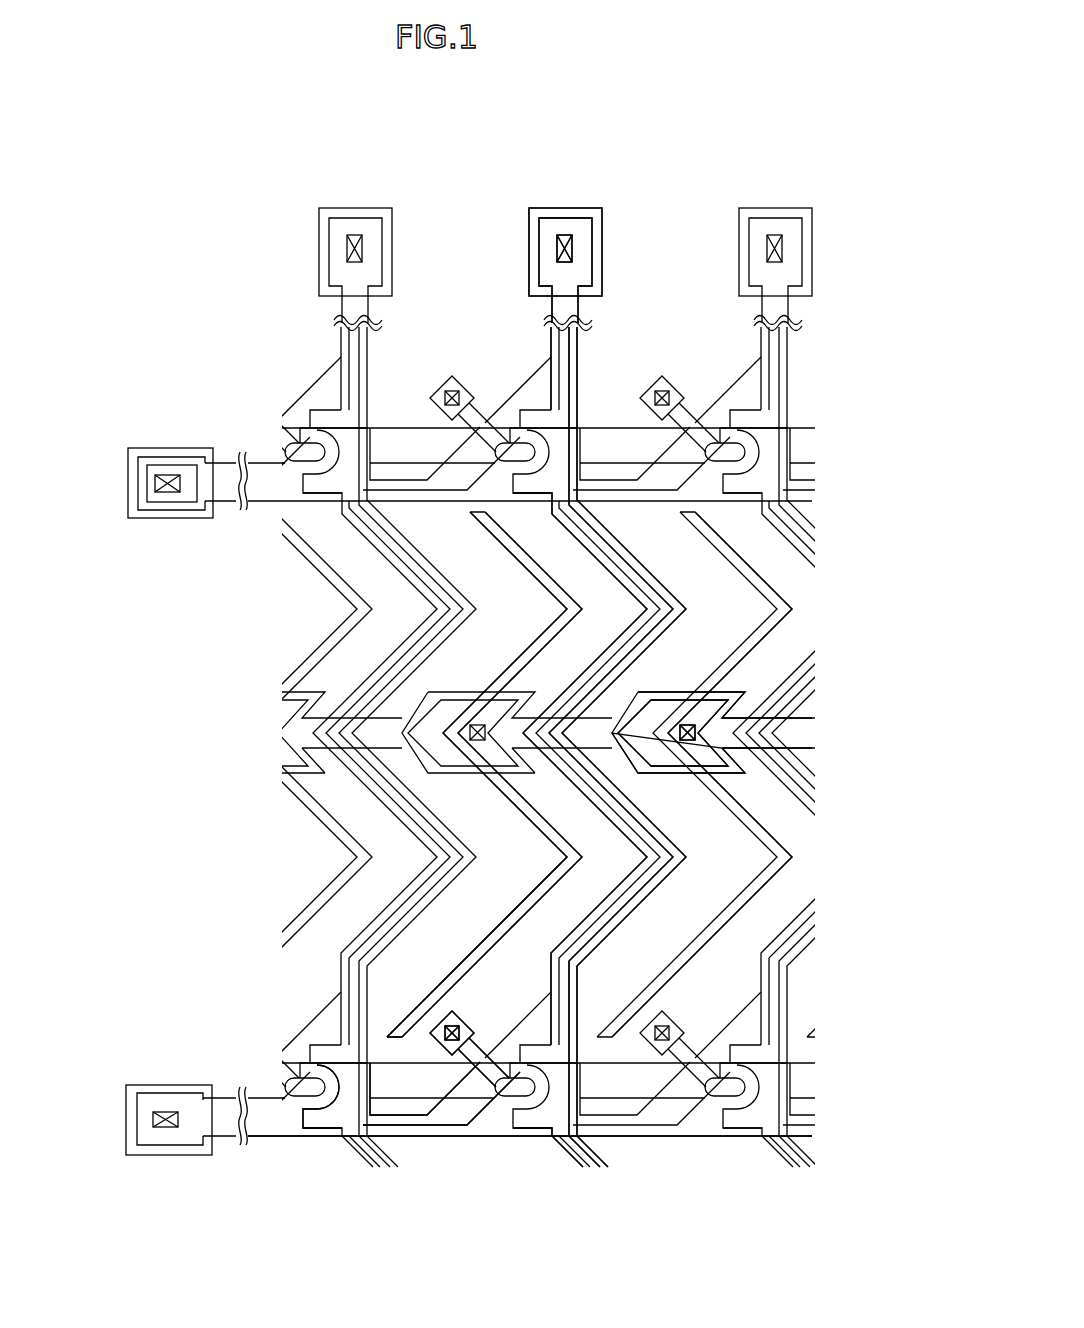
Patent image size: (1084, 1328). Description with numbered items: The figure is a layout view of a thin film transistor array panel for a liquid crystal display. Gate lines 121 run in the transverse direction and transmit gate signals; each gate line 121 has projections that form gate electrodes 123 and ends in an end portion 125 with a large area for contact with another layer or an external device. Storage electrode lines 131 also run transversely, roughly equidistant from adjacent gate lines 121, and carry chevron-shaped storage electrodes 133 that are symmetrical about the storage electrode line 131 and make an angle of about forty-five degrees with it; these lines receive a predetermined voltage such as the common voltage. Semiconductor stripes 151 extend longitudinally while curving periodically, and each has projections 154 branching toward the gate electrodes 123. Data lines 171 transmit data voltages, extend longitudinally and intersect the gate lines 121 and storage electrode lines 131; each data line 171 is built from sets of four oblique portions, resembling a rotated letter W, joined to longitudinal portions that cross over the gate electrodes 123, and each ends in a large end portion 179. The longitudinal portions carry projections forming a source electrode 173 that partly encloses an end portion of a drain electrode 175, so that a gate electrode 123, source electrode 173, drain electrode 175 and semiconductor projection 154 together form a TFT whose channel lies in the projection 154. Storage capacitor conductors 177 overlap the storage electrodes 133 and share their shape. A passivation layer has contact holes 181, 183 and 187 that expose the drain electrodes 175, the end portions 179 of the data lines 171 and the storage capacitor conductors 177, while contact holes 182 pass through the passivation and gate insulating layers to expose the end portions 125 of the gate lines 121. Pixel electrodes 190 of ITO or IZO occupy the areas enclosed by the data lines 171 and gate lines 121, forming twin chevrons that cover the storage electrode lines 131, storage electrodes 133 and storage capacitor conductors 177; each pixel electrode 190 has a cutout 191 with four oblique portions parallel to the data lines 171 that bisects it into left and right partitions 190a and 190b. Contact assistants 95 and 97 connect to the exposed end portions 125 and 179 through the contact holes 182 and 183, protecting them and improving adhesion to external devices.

The contact assistant 95 is at (126, 1122).
The contact assistant 97 is at (602, 233).
The gate line 121 is at (443, 1138).
The gate electrode 123 is at (502, 1138).
The end portion 125 is at (168, 1146).
The storage electrode line 131 is at (808, 717).
The storage electrode 133 is at (747, 696).
The semiconductor stripe 151 is at (666, 840).
The projection 154 is at (507, 1122).
The data line 171 is at (620, 882).
The source electrode 173 is at (528, 1040).
The drain electrode 175 is at (470, 1017).
The storage capacitor conductor 177 is at (752, 670).
The end portion 179 is at (592, 255).
The contact hole 181 is at (455, 1025).
The contact hole 182 is at (153, 1101).
The contact hole 183 is at (566, 228).
The contact hole 187 is at (730, 775).
The pixel electrode 190 is at (624, 791).
The left partition 190a is at (475, 950).
The right partition 190b is at (513, 912).
The cutout 191 is at (458, 968).